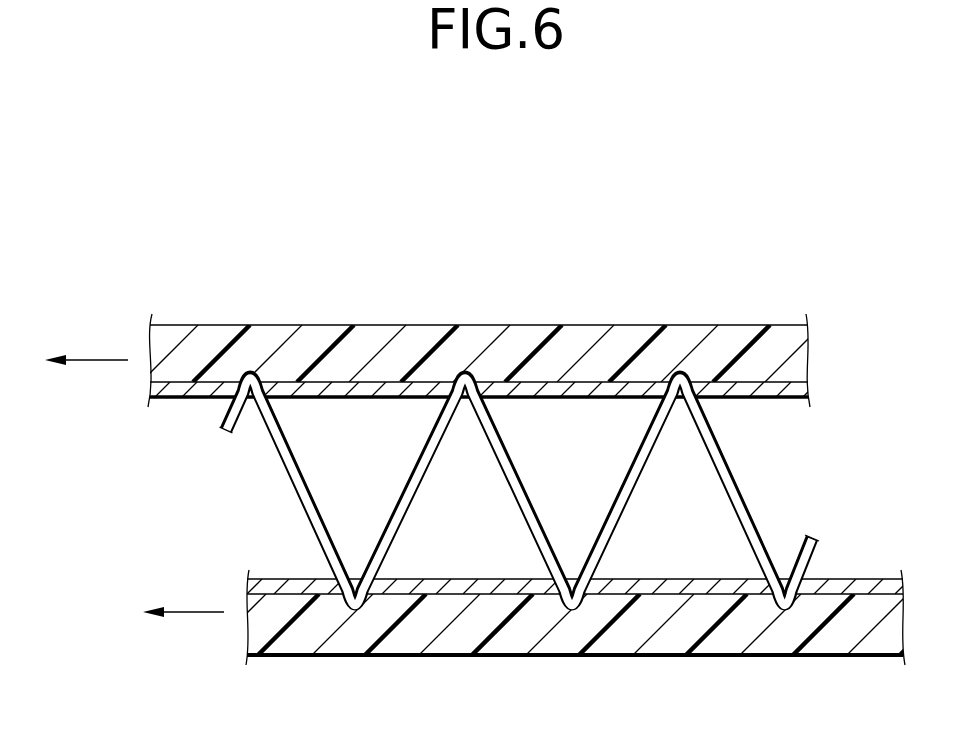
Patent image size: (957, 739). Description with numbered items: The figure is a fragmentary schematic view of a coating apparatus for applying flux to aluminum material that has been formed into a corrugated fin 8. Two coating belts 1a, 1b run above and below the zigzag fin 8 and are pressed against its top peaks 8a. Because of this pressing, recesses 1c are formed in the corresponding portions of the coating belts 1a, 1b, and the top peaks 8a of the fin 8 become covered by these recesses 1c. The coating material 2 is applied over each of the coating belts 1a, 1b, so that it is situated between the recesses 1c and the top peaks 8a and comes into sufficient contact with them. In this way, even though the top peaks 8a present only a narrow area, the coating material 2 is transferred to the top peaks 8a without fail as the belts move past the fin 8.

The coating belt 1a is at (637, 328).
The coating belt 1b is at (663, 637).
The recesses 1c is at (256, 368).
The coating material 2 is at (536, 408).
The corrugated fin 8 is at (744, 492).
The top peaks 8a is at (706, 410).